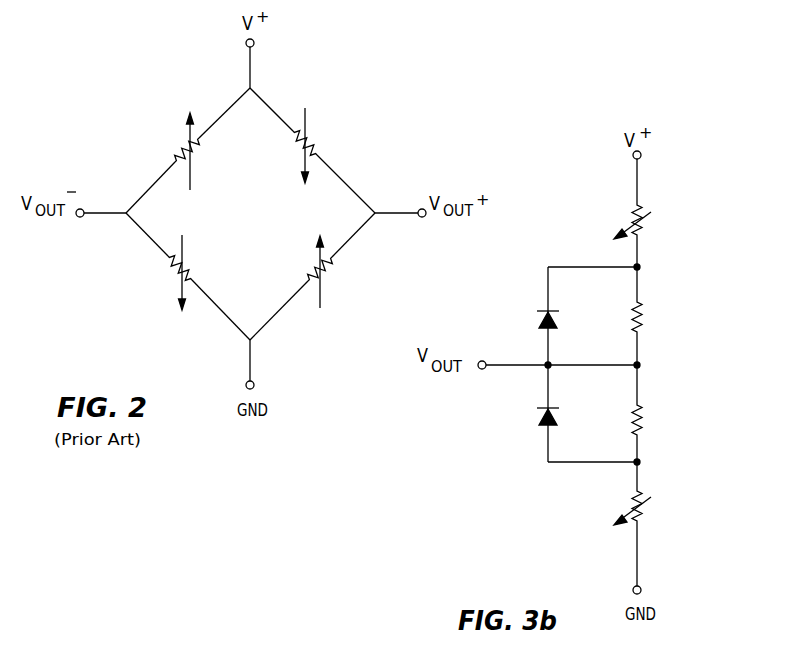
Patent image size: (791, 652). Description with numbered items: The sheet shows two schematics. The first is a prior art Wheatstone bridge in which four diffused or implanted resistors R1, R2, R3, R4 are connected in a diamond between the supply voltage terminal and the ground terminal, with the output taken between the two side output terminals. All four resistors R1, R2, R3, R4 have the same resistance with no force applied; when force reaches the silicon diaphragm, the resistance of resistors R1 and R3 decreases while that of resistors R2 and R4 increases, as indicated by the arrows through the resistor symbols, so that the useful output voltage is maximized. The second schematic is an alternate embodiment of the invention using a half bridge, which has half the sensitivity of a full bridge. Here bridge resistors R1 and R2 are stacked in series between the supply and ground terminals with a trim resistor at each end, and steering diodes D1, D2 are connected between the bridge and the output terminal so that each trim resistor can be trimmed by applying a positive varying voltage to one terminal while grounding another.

In FIG. 2, the bridge resistor R1− R1 is at (339, 112).
In FIG. 3B, the bridge resistor R1− R1 is at (681, 311).
In FIG. 2, the bridge resistor R2+ R2 is at (312, 276).
In FIG. 3B, the bridge resistor R2+ R2 is at (661, 419).
In FIG. 2, the bridge resistor R3− R3 is at (168, 286).
In FIG. 2, the bridge resistor R4+ R4 is at (188, 150).
In FIG. 3B, the steering diode D1 is at (534, 321).
In FIG. 3B, the steering diode D2 is at (534, 420).